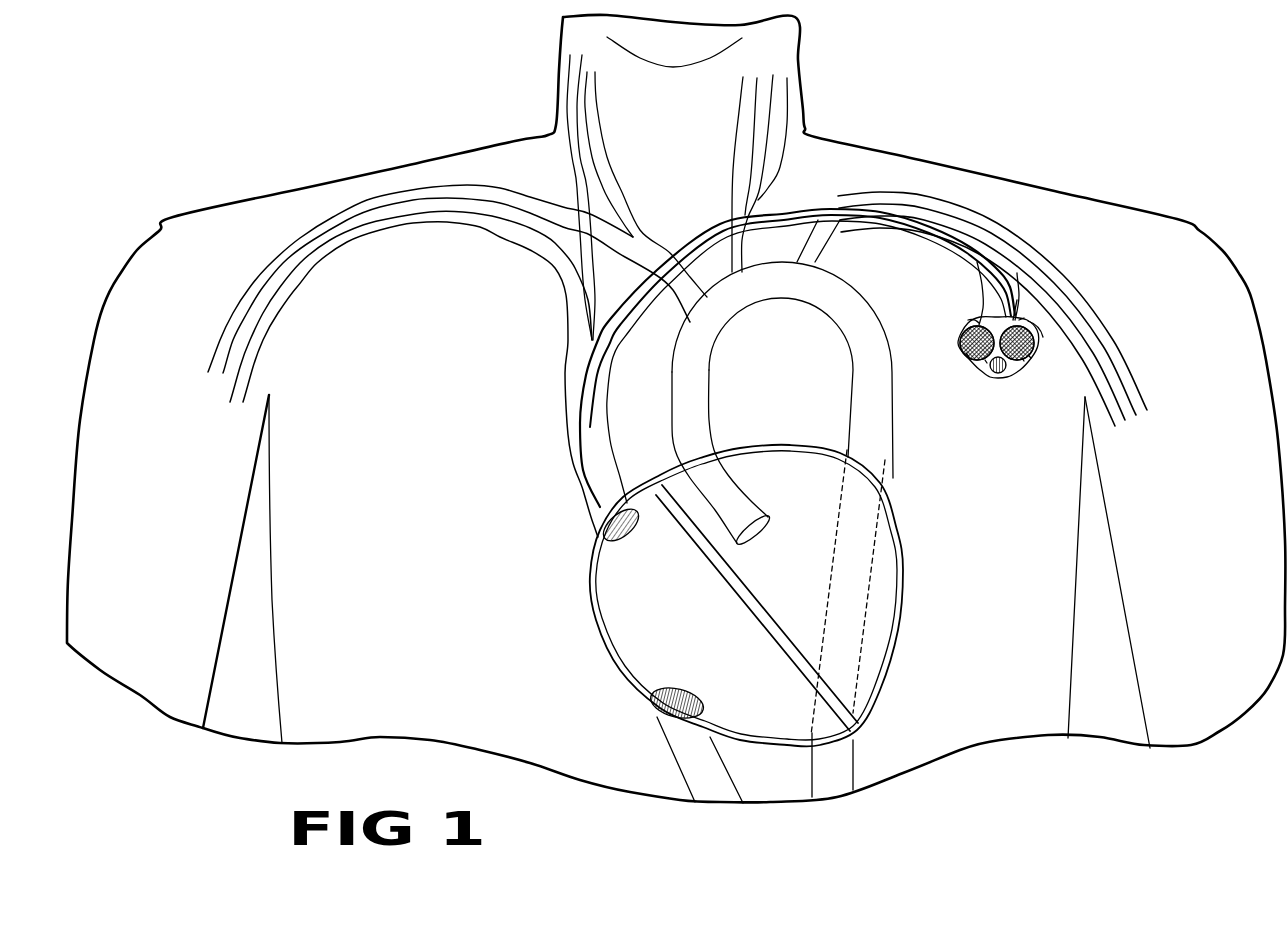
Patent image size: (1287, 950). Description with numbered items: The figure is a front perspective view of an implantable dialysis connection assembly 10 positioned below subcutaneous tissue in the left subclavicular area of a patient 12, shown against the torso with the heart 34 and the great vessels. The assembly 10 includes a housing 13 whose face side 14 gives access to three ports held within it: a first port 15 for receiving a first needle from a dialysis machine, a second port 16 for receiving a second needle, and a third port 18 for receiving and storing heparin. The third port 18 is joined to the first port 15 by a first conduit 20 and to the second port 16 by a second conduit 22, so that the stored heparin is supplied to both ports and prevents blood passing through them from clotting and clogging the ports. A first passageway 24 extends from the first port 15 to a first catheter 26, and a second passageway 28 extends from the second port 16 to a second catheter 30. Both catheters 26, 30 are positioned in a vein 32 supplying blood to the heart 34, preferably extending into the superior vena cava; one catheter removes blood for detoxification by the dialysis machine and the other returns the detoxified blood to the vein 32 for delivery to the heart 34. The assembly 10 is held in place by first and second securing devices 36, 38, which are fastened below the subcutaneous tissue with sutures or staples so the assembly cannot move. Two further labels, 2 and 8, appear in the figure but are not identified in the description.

The implantable cardiac stimulation system 2 is at (1031, 206).
The heart 8 is at (512, 512).
The implantable dialysis connection assembly 10 is at (962, 428).
The patient 12 is at (208, 132).
The housing 13 is at (942, 343).
The face side 14 is at (1024, 318).
The first port 15 is at (968, 355).
The second port 16 is at (1032, 357).
The third port 18 is at (998, 376).
The first conduit 20 is at (986, 362).
The second conduit 22 is at (1023, 360).
The first passageway 24 is at (975, 322).
The first catheter 26 is at (975, 262).
The second passageway 28 is at (1005, 322).
The second catheter 30 is at (1022, 323).
The vein 32 is at (816, 208).
The heart 34 is at (605, 622).
The first securing device 36 is at (970, 325).
The second securing device 38 is at (1049, 342).